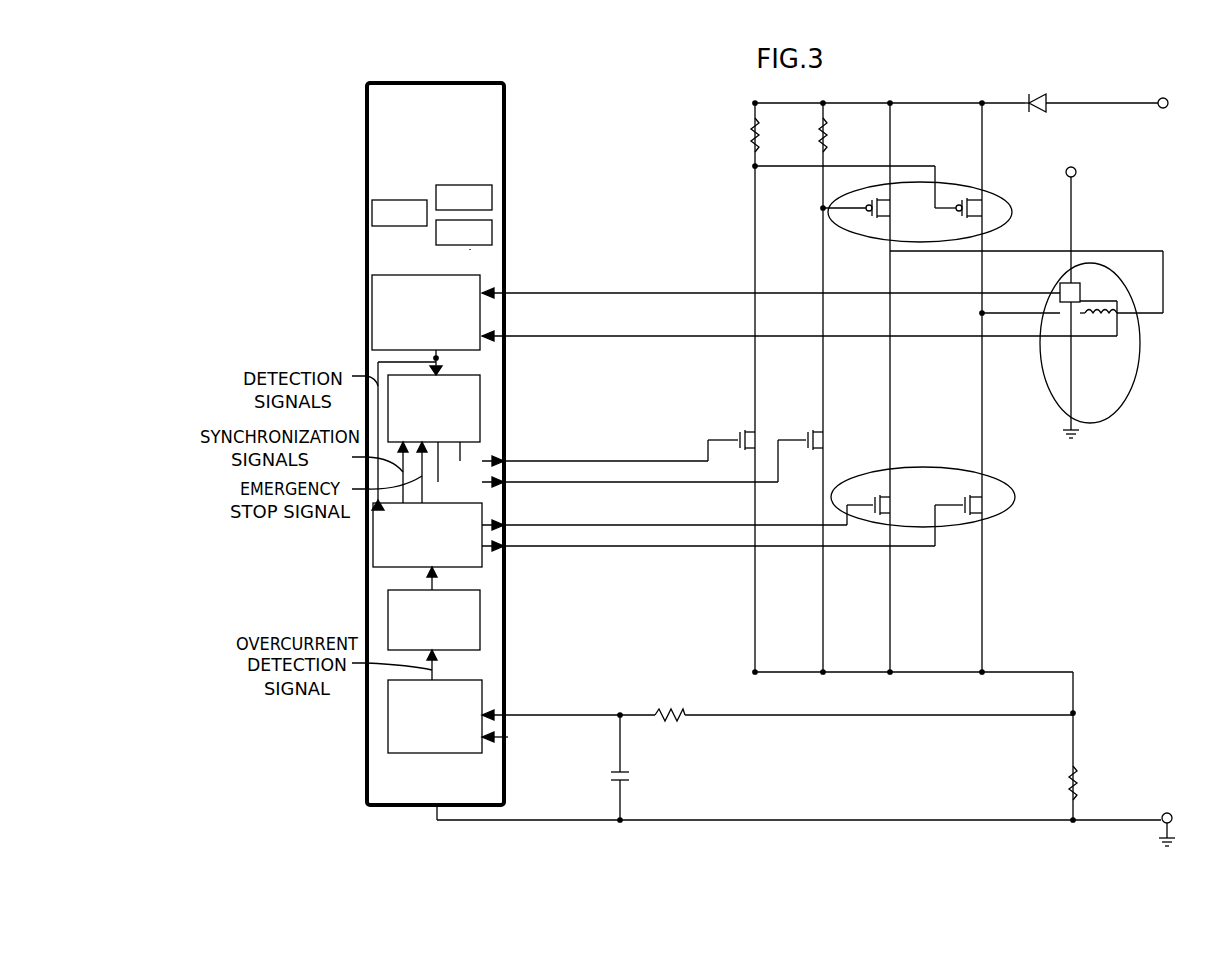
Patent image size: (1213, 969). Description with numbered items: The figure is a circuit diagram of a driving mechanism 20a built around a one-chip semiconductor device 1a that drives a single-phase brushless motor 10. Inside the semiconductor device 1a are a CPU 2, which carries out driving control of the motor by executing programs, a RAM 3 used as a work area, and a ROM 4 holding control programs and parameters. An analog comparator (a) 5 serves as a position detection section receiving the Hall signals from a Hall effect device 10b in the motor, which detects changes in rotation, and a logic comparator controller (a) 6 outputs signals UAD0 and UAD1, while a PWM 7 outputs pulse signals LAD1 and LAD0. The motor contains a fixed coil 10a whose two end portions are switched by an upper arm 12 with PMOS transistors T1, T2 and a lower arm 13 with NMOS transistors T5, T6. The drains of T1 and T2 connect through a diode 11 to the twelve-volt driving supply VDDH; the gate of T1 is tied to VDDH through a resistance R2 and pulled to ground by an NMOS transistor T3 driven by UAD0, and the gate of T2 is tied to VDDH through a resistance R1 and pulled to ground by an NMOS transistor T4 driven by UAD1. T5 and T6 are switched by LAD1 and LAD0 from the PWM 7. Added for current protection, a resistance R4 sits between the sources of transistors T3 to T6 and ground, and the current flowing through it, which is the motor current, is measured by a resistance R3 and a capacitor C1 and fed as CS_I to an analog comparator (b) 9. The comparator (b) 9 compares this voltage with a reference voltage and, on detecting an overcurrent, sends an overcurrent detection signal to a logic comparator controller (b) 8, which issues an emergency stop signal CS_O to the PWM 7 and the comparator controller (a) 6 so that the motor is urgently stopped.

The semiconductor device 1a is at (483, 83).
The CPU 2 is at (402, 200).
The random access memory (RAM) 3 is at (470, 249).
The read-only memory (ROM) 4 is at (470, 185).
The comparator (a) 5 is at (403, 274).
The comparator controller (a) 6 is at (472, 374).
The pulse width modulator (PWM) 7 is at (373, 545).
The comparator controller (b) 8 is at (388, 600).
The comparator (b) 9 is at (388, 732).
The motor 10 is at (1136, 396).
The coil 10a is at (1105, 318).
The Hall effect device 10b is at (1080, 284).
The diode 11 is at (1037, 95).
The upper arm 12 is at (984, 190).
The lower arm 13 is at (990, 476).
The driving mechanism 20a is at (661, 70).
The resistance R1 is at (750, 136).
The resistance R2 is at (828, 134).
The resistance R3 is at (670, 706).
The resistance R4 is at (1082, 774).
The capacitor C1 is at (630, 775).
The PMOS transistor T1 is at (866, 220).
The PMOS transistor T2 is at (958, 220).
The NMOS transistor T3 is at (808, 432).
The NMOS transistor T4 is at (740, 432).
The NMOS transistor T5 is at (875, 496).
The NMOS transistor T6 is at (964, 498).